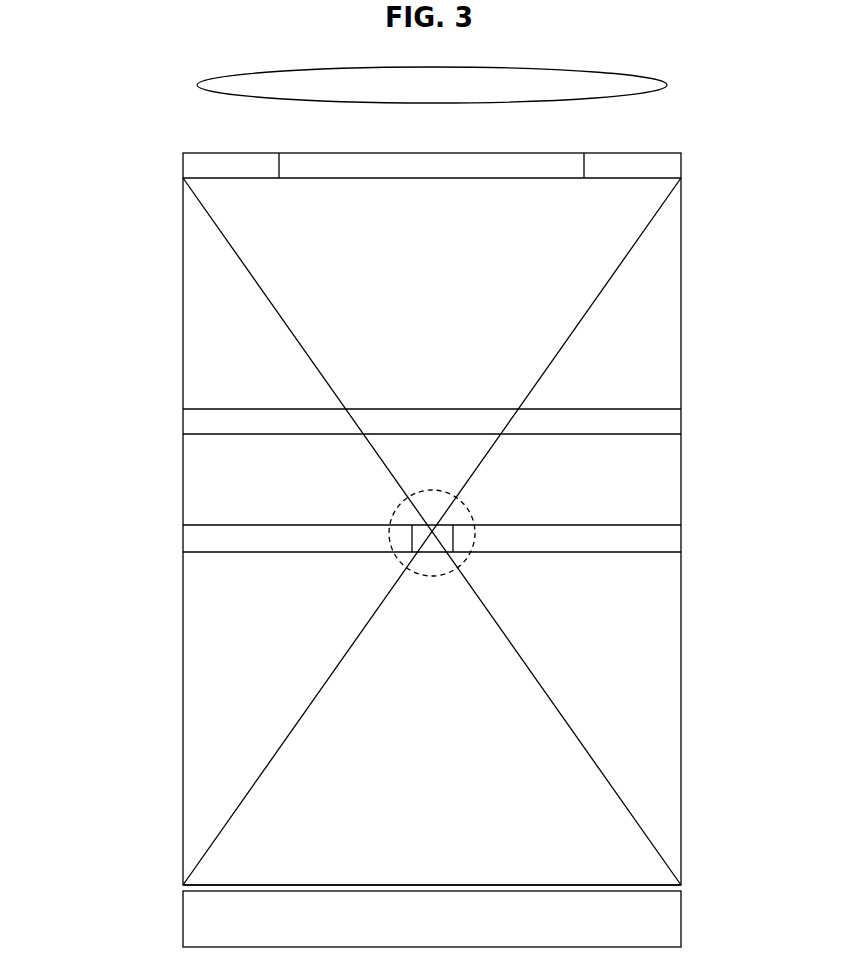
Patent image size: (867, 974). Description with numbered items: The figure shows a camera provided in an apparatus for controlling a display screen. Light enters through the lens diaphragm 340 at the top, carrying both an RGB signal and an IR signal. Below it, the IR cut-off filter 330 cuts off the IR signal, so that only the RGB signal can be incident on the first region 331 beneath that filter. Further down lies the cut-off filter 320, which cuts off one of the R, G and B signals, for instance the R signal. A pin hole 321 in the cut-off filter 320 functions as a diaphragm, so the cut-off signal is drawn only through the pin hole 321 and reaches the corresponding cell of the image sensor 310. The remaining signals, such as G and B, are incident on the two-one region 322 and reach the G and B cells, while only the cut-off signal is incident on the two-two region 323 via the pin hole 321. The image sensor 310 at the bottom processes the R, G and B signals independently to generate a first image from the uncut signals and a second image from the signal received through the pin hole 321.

The image sensor 310 is at (200, 924).
The cut-off filter 320 is at (200, 540).
The pin hole 321 is at (468, 508).
The 2-1 region 322 is at (541, 622).
The 2-2 region 323 is at (370, 790).
The IR cut-off filter 330 is at (668, 423).
The first region 331 is at (258, 490).
The lens diaphragm 340 is at (565, 160).